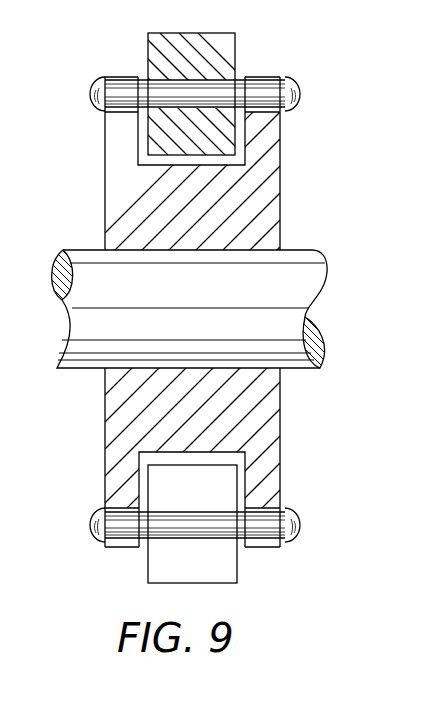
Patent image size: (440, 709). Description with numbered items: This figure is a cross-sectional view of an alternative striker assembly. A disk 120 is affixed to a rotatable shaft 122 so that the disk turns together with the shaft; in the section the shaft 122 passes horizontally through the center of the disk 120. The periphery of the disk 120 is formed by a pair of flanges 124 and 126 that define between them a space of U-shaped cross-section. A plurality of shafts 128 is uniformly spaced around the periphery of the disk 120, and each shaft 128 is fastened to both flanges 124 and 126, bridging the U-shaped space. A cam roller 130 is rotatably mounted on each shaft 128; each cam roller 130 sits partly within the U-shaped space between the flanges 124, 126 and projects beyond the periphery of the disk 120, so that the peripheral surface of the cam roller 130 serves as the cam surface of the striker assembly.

The disk 120 is at (283, 208).
The rotatable shaft 122 is at (90, 317).
The flange 124 is at (105, 131).
The flange 126 is at (268, 133).
The shaft 128 is at (241, 92).
The cam roller 130 is at (148, 39).